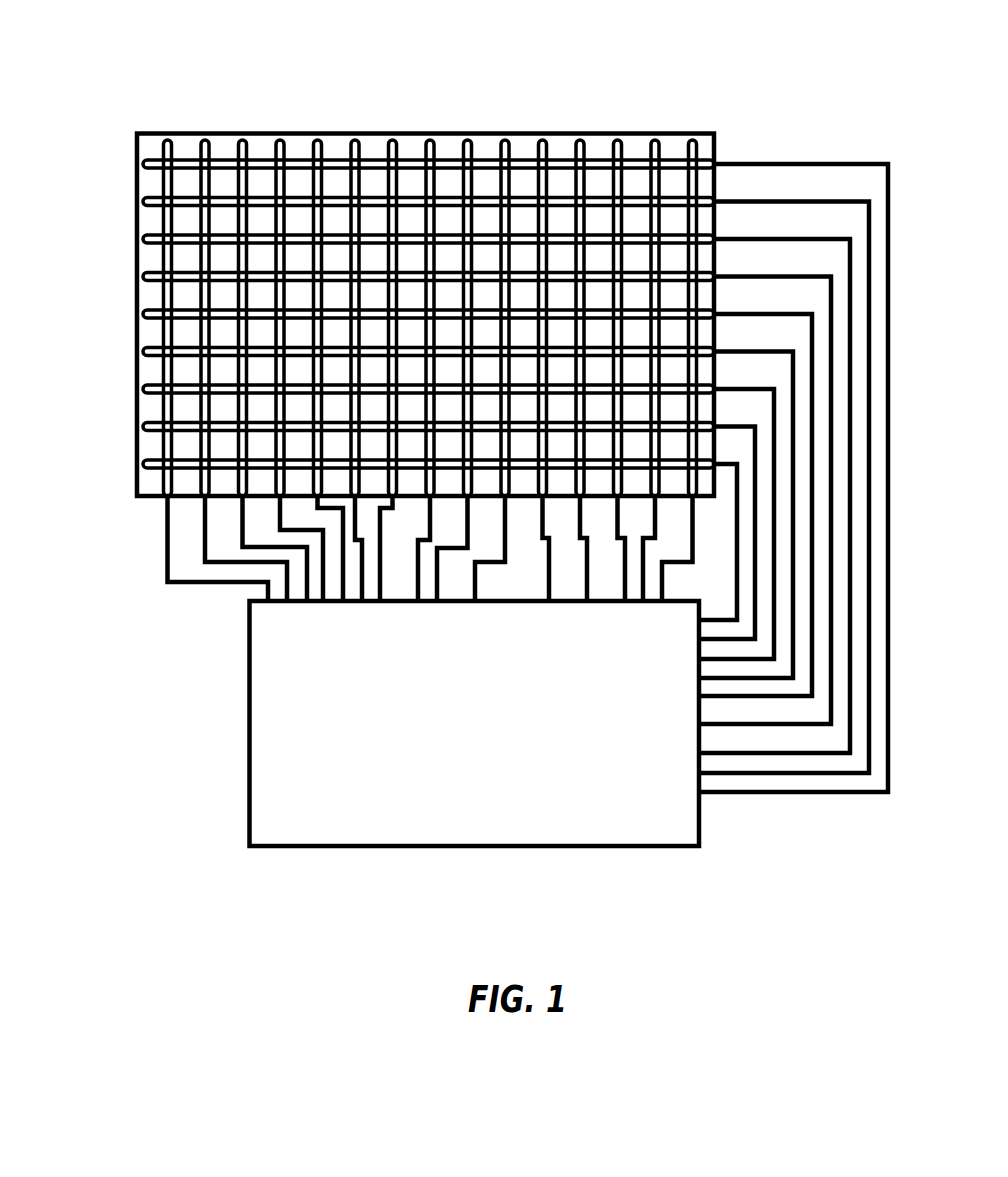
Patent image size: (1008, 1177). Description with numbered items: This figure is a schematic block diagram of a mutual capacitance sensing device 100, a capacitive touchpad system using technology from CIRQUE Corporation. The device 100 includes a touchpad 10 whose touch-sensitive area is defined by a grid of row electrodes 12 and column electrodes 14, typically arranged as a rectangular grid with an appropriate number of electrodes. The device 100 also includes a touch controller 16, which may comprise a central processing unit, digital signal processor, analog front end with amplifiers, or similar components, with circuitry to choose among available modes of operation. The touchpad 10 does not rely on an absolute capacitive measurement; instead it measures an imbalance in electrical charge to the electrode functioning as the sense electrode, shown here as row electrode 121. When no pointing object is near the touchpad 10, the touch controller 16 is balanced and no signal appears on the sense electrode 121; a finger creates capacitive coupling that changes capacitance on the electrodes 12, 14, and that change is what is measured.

The mutual capacitance sensing device 100 is at (112, 70).
The touchpad 10 is at (713, 130).
The row electrodes 12 is at (78, 143).
The column electrodes 14 is at (700, 115).
The row electrode 121 is at (135, 362).
The touch controller 16 is at (468, 793).